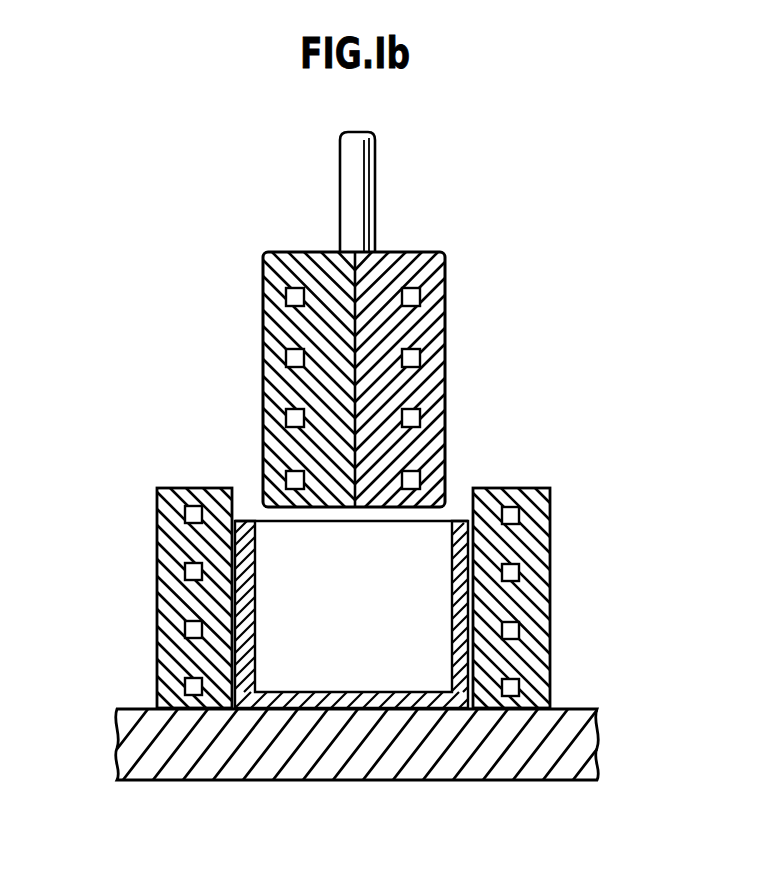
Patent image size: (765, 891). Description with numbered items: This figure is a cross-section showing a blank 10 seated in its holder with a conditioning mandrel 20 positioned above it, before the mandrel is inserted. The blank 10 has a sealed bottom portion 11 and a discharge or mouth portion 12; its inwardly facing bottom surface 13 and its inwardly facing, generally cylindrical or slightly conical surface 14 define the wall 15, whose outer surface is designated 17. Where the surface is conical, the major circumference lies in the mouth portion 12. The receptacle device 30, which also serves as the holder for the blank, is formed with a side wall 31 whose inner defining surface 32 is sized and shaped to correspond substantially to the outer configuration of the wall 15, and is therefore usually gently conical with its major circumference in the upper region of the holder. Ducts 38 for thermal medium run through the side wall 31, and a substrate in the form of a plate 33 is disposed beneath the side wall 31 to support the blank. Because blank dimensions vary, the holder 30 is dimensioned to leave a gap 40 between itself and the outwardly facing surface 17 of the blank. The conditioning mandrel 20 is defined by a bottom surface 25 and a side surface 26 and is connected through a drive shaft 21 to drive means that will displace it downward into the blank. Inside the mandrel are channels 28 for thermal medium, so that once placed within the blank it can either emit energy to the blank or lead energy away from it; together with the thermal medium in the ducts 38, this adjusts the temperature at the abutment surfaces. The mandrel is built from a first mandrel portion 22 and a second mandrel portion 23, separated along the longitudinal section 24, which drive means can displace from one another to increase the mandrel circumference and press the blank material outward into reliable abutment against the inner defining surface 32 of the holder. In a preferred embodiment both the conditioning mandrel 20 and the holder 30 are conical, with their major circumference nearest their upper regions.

The blank 10 is at (460, 490).
The sealed bottom portion 11 is at (297, 700).
The mouth portion 12 is at (455, 540).
The inwardly facing bottom surface 13 is at (375, 697).
The inwardly facing surface 14 is at (452, 617).
The wall 15 is at (458, 603).
The outer surface 17 is at (470, 657).
The conditioning mandrel 20 is at (380, 379).
The drive shaft 21 is at (353, 188).
The first mandrel portion 22 is at (286, 298).
The second mandrel portion 23 is at (447, 393).
The longitudinal section 24 is at (357, 328).
The bottom surface 25 is at (343, 508).
The side surface 26 is at (447, 355).
The channels 28 is at (286, 418).
The receptacle device 30 is at (201, 485).
The side wall 31 is at (160, 645).
The inner defining surface 32 is at (257, 553).
The plate 33 is at (358, 760).
The ducts 38 is at (185, 520).
The gap 40 is at (240, 488).